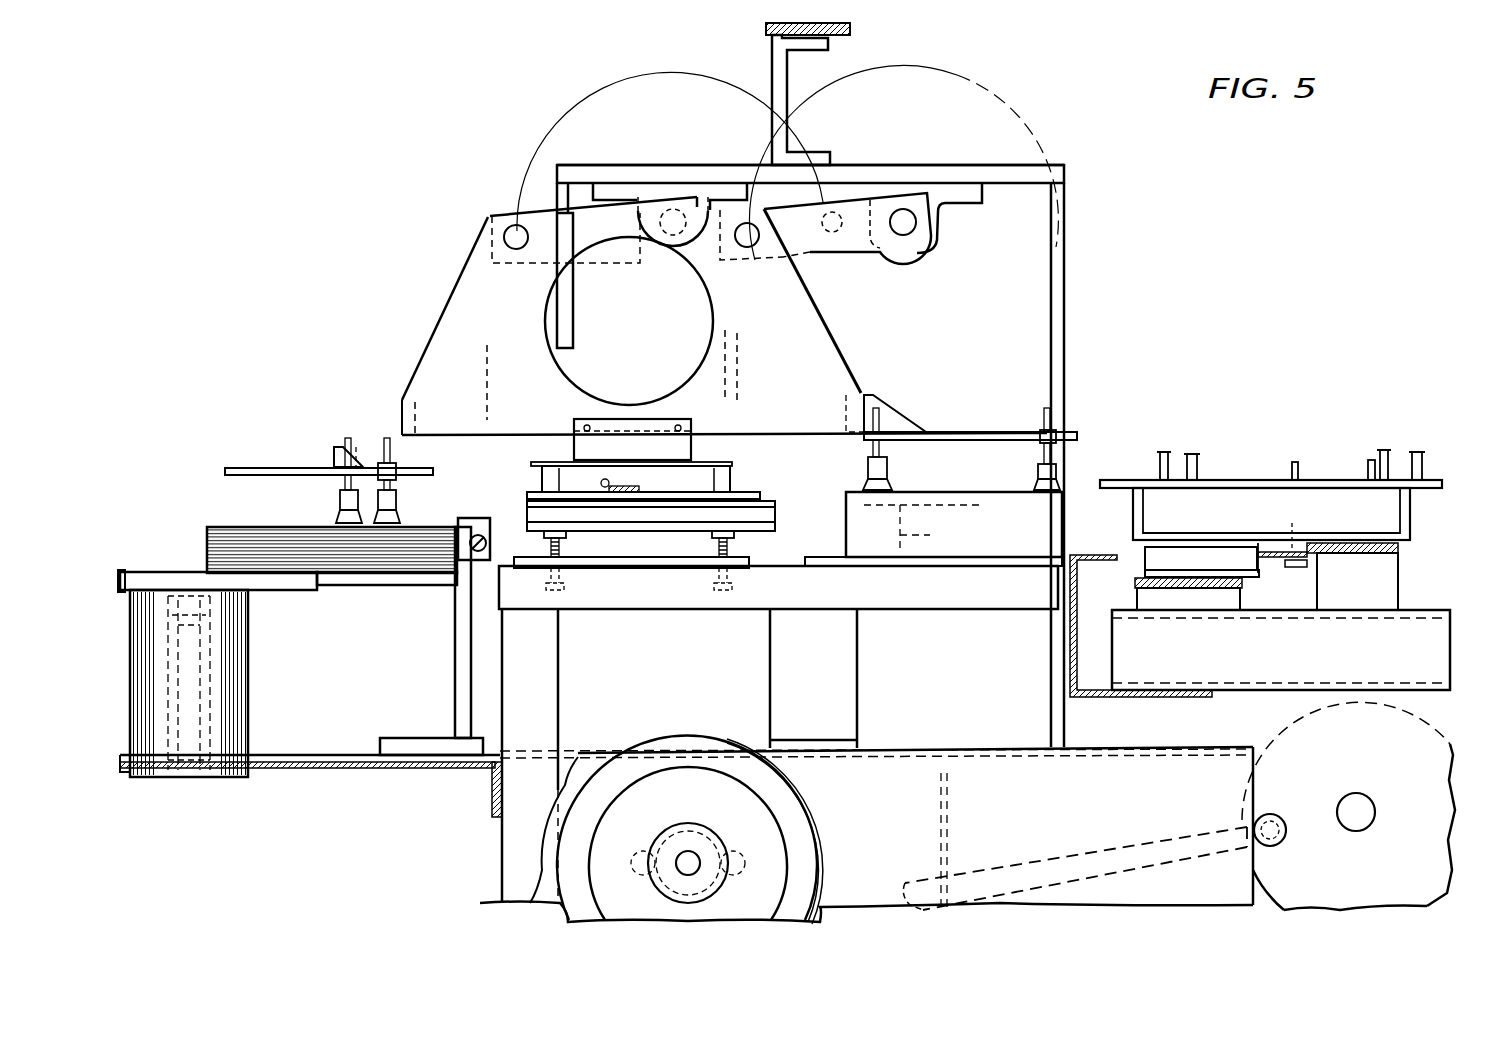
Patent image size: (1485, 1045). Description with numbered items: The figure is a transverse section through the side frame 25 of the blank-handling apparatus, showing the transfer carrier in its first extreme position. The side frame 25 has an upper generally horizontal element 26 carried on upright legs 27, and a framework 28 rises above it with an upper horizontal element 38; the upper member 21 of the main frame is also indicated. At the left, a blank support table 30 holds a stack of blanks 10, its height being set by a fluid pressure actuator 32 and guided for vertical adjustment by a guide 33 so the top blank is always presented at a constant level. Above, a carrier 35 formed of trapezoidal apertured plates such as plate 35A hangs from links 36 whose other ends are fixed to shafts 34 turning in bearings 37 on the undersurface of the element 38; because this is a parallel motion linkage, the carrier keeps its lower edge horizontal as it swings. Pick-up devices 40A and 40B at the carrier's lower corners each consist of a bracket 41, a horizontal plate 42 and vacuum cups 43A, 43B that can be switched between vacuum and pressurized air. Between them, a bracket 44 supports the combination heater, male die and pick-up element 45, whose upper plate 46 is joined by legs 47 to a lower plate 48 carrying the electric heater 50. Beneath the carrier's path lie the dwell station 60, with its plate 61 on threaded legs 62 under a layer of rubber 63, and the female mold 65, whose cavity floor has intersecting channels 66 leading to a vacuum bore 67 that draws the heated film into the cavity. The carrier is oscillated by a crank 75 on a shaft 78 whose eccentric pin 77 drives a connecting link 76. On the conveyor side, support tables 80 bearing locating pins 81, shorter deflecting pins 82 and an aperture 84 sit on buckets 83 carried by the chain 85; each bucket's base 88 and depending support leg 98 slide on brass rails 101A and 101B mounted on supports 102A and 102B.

The blanks 10 is at (222, 522).
The upper member 21 is at (1090, 690).
The side frame 25 is at (975, 612).
The upper horizontal element 26 is at (698, 598).
The legs 27 is at (553, 683).
The framework 28 is at (1055, 152).
The blank support table 30 is at (352, 574).
The fluid pressure actuator 32 is at (218, 682).
The guide 33 is at (458, 644).
The shafts 34 is at (684, 185).
The carrier 35 is at (800, 373).
The plate 35A is at (816, 315).
The links 36 is at (595, 252).
The bearings 37 is at (600, 192).
The upper horizontal element 38 is at (893, 172).
The pick-up device 40A is at (305, 425).
The pick-up device 40B is at (965, 405).
The bracket 41 is at (345, 445).
The plate 42 is at (230, 468).
The vacuum cups 43A is at (392, 500).
The vacuum cups 43B is at (890, 476).
The bracket 44 is at (605, 428).
The combination heater, male die and pick-up element 45 is at (693, 452).
The upper plate 46 is at (540, 462).
The legs 47 is at (545, 480).
The lower plate 48 is at (755, 496).
The heater 50 is at (620, 486).
The dwell station 60 is at (658, 540).
The plate 61 is at (768, 528).
The threaded legs 62 is at (565, 550).
The layer of rubber 63 is at (778, 516).
The female mold 65 is at (1030, 537).
The channels 66 is at (940, 500).
The bore 67 is at (910, 536).
The crank 75 is at (1418, 738).
The connecting link 76 is at (1143, 835).
The eccentric pin 77 is at (1274, 828).
The shaft 78 is at (1358, 806).
The support table 80 is at (1330, 478).
The pins 81 is at (1165, 465).
The deflecting pins 82 is at (1297, 460).
The bucket 83 is at (1400, 520).
The aperture 84 is at (1230, 478).
The chain 85 is at (1292, 567).
The base 88 is at (1358, 515).
The support leg 98 is at (1165, 558).
The brass rail 101A is at (1398, 548).
The brass rail 101B is at (1137, 588).
The support 102A is at (1380, 590).
The support 102B is at (1222, 603).